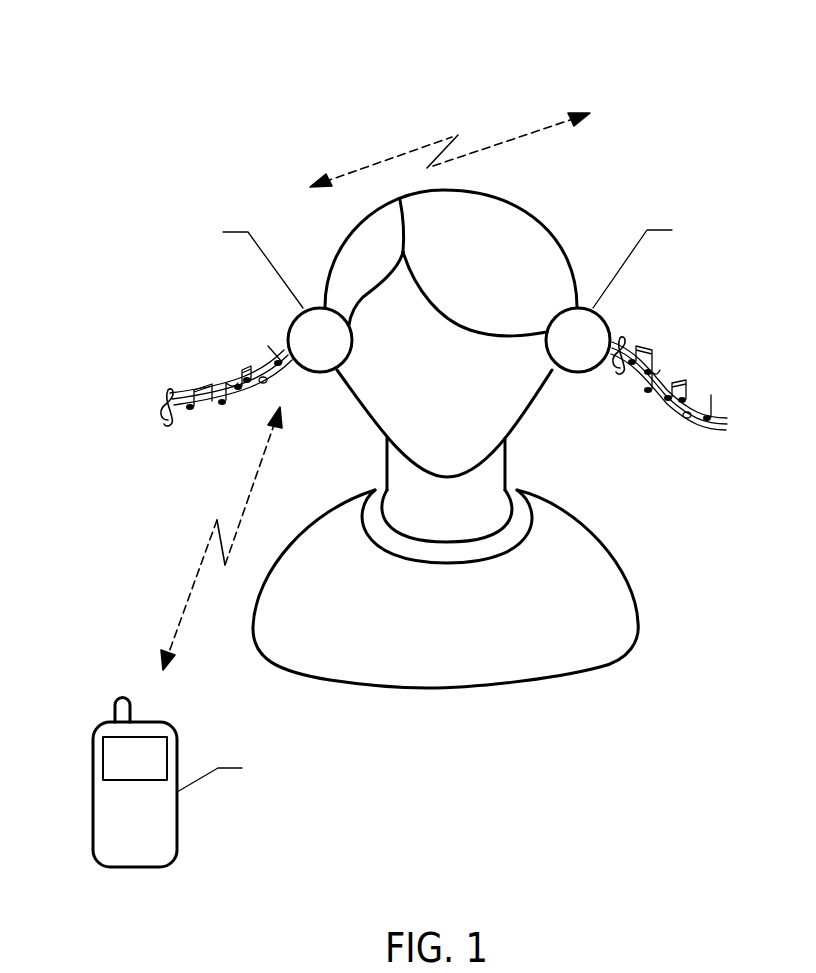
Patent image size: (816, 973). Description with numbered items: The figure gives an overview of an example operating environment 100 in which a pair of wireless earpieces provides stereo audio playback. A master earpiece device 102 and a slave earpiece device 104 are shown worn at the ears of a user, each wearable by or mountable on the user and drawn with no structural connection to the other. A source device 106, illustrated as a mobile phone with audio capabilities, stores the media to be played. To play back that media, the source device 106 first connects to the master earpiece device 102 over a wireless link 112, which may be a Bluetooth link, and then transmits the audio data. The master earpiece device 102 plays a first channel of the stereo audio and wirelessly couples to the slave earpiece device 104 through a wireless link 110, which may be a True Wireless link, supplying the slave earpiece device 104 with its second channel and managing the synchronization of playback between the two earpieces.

The operating environment 100 is at (665, 67).
The master earpiece device 102 is at (289, 326).
The slave earpiece device 104 is at (606, 318).
The source device 106 is at (93, 795).
The wireless link 110 is at (402, 153).
The wireless link 112 is at (190, 597).